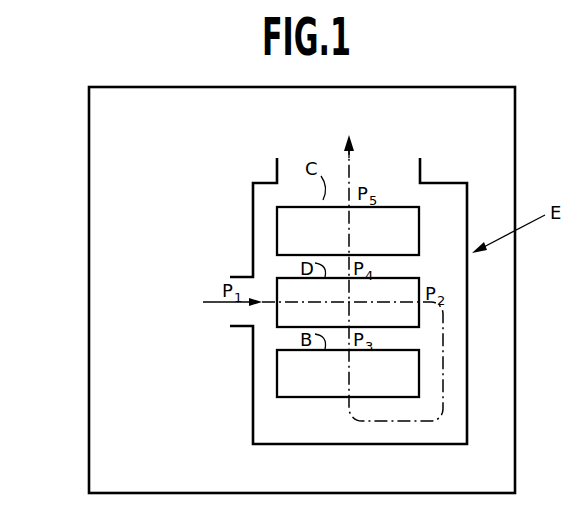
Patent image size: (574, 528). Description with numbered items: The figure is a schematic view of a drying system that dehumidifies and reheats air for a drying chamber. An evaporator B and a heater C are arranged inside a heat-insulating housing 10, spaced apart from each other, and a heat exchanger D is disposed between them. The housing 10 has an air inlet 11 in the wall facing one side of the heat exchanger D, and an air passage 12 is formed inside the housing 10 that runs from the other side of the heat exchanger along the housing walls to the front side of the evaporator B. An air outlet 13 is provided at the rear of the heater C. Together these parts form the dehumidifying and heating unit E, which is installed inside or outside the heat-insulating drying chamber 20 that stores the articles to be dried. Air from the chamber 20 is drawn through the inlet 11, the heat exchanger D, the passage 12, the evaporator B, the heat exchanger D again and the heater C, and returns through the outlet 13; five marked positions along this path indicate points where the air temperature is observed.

The heat-insulating housing 10 is at (468, 289).
The air inlet 11 is at (238, 314).
The air passage 12 is at (456, 367).
The air outlet 13 is at (384, 173).
The heat-insulating drying chamber 20 is at (88, 252).